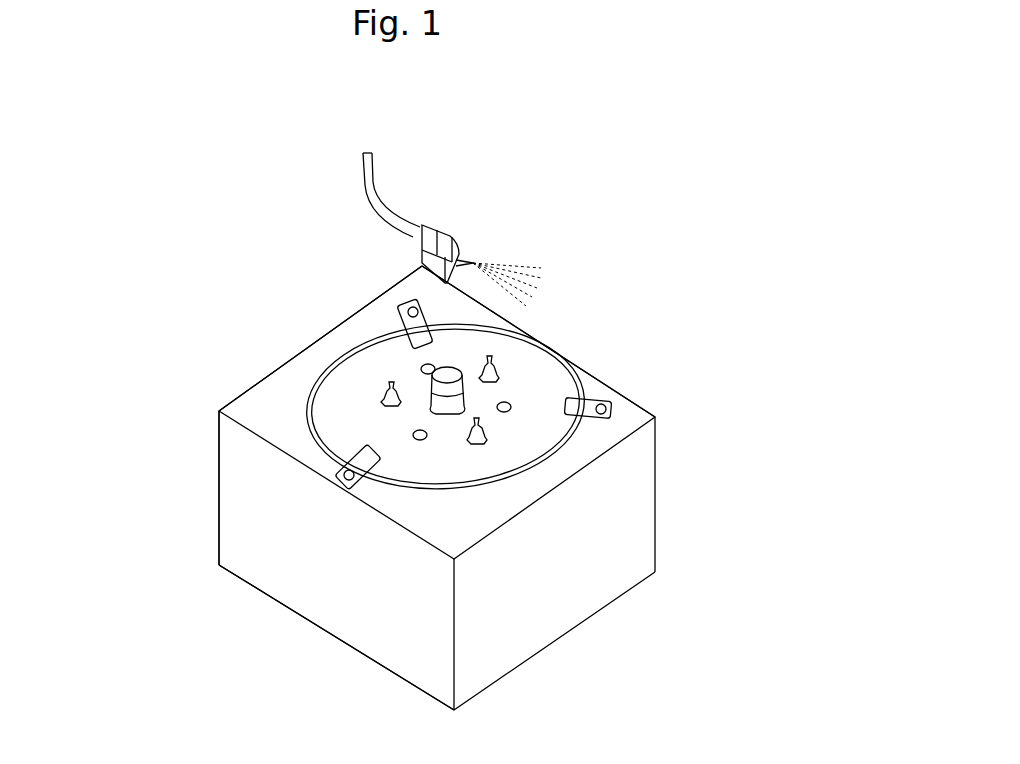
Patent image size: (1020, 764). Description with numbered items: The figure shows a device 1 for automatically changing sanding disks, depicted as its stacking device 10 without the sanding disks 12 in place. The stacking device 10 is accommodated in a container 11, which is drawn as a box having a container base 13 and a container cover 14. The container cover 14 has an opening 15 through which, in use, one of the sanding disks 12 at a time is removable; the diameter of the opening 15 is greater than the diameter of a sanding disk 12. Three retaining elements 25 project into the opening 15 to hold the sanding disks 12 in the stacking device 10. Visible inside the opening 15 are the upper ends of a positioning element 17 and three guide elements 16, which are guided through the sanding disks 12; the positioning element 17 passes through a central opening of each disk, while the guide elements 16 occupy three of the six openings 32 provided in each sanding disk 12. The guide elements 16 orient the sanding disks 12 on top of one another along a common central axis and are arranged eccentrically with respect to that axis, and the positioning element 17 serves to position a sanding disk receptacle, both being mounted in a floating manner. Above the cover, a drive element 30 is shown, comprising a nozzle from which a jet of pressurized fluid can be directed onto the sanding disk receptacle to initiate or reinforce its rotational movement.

The device 1 is at (575, 160).
The stacking device 10 is at (218, 347).
The container 11 is at (263, 535).
The sanding disk 12 is at (537, 377).
The container base 13 is at (313, 625).
The container cover 14 is at (327, 337).
The opening 15 is at (555, 457).
The guide element 16 is at (480, 443).
The positioning element 17 is at (455, 372).
The retaining element 25 is at (427, 316).
The drive element 30 is at (434, 224).
The opening 32 is at (428, 364).